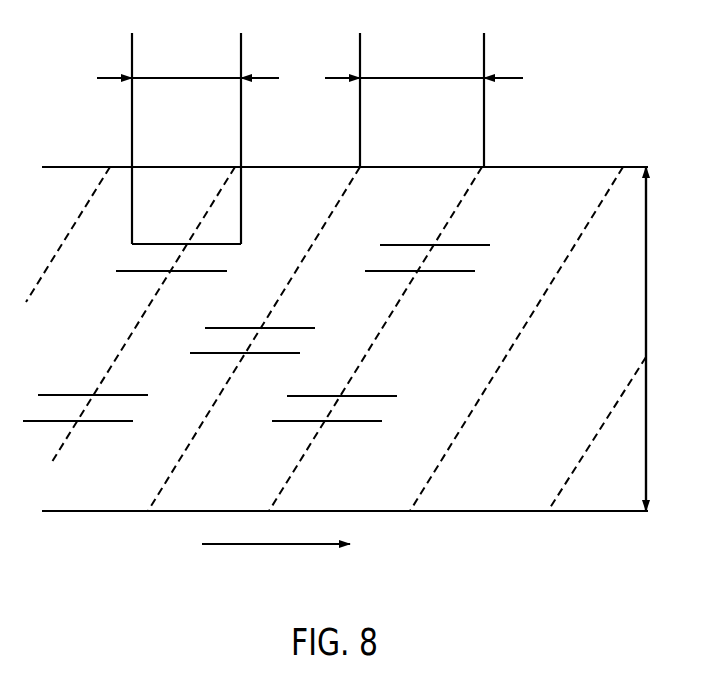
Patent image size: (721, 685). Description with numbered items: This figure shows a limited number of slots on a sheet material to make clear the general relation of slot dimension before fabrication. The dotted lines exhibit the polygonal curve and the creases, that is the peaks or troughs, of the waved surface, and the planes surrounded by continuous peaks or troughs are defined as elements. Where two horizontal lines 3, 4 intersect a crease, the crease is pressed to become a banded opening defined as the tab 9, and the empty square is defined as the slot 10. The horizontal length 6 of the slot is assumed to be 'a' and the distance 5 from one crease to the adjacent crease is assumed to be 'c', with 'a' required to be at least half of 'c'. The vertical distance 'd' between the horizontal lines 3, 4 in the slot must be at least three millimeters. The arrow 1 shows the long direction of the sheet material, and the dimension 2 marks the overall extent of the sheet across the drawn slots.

The long direction of sheet material 1 is at (283, 545).
The panel height dimension 2 is at (646, 292).
The horizontal line 3 is at (405, 243).
The horizontal line 4 is at (447, 272).
The distance from crease to adjacent crease 5 is at (430, 78).
The horizontal length 6 is at (183, 78).
The tab 9 is at (200, 256).
The slot 10 is at (165, 243).